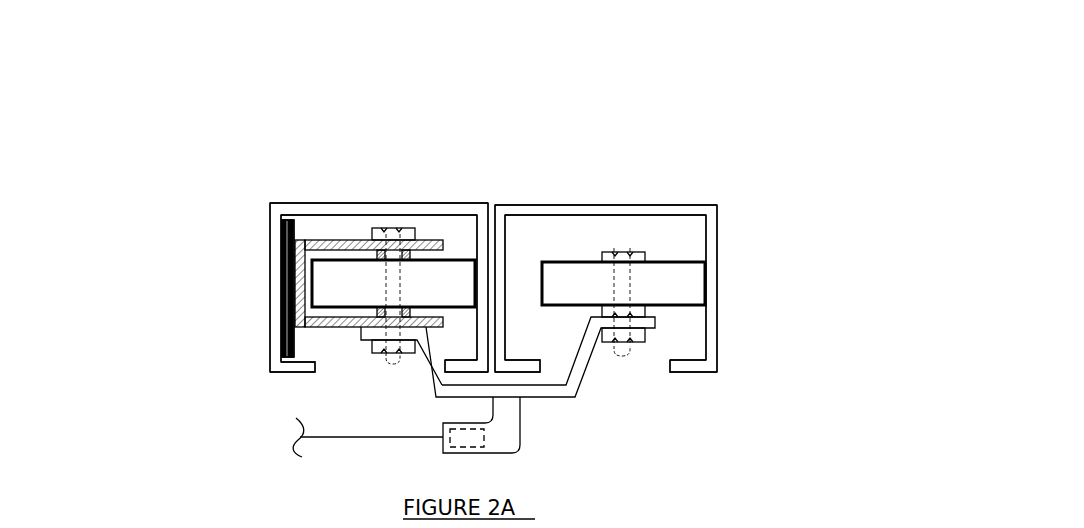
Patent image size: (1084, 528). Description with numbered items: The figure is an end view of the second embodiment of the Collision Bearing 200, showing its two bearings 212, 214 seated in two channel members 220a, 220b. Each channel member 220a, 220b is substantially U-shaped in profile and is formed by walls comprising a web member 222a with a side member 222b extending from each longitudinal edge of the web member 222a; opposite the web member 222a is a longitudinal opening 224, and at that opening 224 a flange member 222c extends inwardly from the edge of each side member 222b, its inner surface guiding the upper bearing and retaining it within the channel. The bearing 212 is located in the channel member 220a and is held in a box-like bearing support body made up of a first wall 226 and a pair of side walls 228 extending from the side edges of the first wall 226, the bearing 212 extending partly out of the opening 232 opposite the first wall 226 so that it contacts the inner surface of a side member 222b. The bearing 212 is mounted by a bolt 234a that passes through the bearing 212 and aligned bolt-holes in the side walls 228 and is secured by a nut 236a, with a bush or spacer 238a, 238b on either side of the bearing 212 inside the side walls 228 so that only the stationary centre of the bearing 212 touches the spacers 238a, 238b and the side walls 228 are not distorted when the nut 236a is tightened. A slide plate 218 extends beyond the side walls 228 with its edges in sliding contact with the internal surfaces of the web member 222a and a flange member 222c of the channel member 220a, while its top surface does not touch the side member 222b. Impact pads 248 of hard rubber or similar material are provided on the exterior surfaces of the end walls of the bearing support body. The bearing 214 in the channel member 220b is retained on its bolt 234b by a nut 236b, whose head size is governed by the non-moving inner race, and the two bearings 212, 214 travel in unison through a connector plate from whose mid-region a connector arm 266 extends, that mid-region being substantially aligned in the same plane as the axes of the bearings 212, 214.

The Collision Bearing 200 is at (745, 98).
The bearing 212 is at (463, 249).
The bearing 214 is at (693, 277).
The slide plate 218 is at (289, 282).
The channel member 220a is at (247, 323).
The channel member 220b is at (755, 286).
The web member 222a is at (292, 204).
The side member 222b is at (260, 226).
The flange member 222c is at (285, 368).
The longitudinal opening 224 is at (409, 372).
The first wall 226 is at (301, 320).
The side walls 228 is at (311, 233).
The opening 232 is at (427, 257).
The bolt 234a is at (374, 218).
The bolt 234b is at (600, 245).
The nut 236a is at (377, 347).
The nut 236b is at (608, 337).
The bush or spacer 238a is at (362, 257).
The bush or spacer 238b is at (442, 294).
The impact pads 248 is at (291, 221).
The connector arm 266 is at (502, 435).